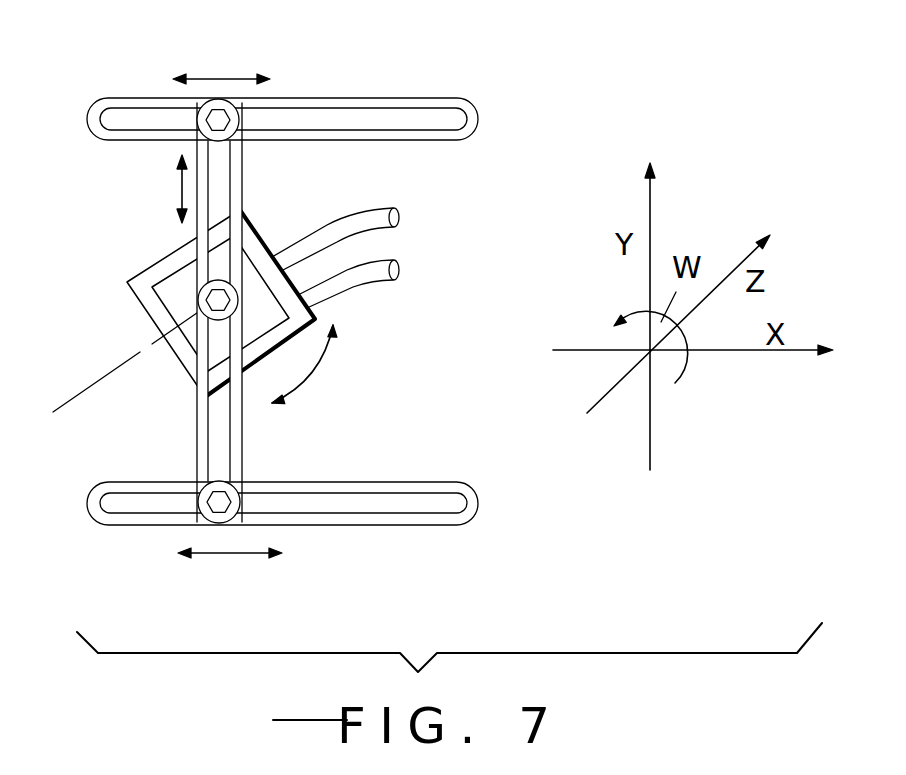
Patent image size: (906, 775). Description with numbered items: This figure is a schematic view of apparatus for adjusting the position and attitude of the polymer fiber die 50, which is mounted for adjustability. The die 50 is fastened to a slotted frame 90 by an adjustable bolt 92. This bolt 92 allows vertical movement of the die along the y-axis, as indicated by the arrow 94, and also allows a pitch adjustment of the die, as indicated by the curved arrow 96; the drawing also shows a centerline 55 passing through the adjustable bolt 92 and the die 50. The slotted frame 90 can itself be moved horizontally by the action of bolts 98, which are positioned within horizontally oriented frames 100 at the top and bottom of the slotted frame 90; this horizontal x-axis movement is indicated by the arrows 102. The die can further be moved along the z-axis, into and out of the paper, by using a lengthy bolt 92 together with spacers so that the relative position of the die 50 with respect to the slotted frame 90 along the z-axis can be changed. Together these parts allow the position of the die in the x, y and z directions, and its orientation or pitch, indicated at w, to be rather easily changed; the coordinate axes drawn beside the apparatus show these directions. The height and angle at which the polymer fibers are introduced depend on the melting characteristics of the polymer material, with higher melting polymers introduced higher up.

The die 50 is at (163, 253).
The axis line 55 is at (72, 397).
The slotted frame 90 is at (243, 185).
The adjustable bolt 92 is at (204, 302).
The arrow 94 is at (180, 197).
The arrow 96 is at (318, 368).
The bolts 98 is at (236, 104).
The horizontally oriented frames 100 is at (433, 98).
The arrows 102 is at (220, 79).